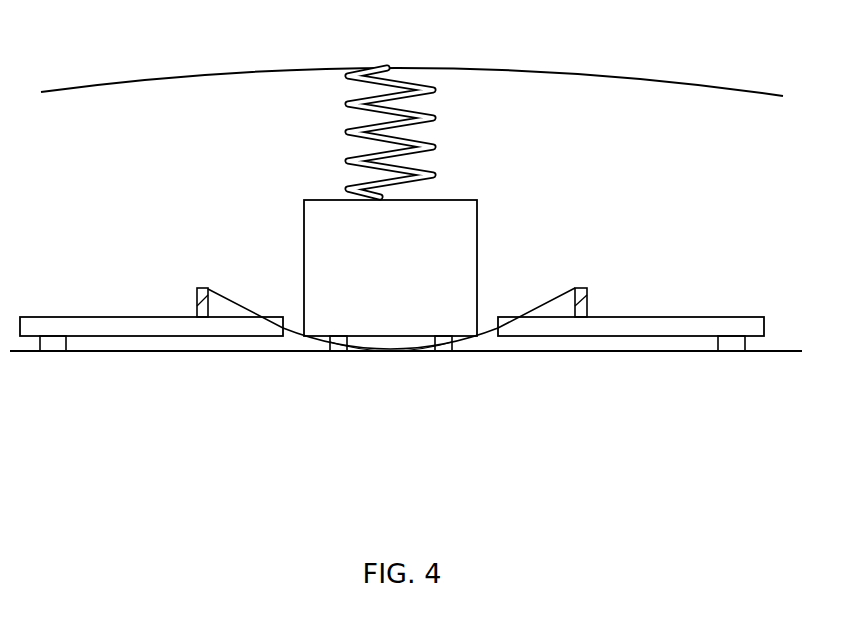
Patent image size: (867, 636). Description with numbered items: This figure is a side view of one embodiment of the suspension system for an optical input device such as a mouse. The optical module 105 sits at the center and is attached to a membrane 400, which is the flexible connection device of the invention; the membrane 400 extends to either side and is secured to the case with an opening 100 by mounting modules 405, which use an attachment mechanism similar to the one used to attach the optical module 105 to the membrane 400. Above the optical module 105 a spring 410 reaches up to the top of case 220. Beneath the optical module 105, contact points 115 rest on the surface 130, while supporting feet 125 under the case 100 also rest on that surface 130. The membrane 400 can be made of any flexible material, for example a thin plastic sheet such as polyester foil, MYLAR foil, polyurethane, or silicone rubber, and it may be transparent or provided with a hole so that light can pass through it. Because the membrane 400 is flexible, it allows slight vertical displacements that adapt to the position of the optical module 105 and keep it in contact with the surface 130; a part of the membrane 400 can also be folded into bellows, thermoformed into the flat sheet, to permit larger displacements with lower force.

The case with an opening 100 is at (695, 315).
The optical module 105 is at (477, 226).
The contact points 115 is at (338, 353).
The supporting feet 125 is at (50, 354).
The surface 130 is at (260, 352).
The top of case 220 is at (488, 66).
The membrane 400 is at (538, 311).
The mounting modules 405 is at (196, 294).
The spring 410 is at (435, 121).